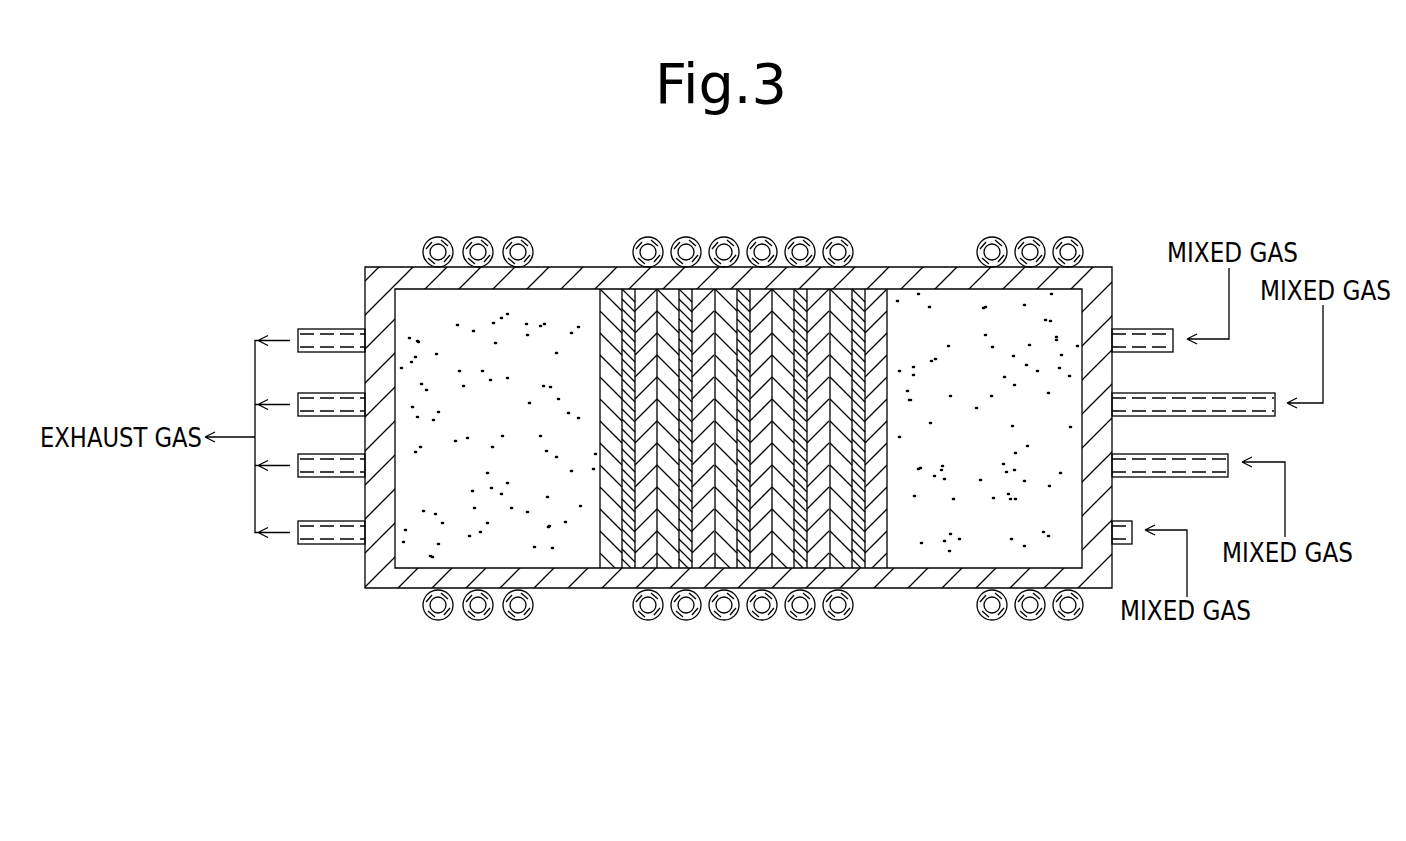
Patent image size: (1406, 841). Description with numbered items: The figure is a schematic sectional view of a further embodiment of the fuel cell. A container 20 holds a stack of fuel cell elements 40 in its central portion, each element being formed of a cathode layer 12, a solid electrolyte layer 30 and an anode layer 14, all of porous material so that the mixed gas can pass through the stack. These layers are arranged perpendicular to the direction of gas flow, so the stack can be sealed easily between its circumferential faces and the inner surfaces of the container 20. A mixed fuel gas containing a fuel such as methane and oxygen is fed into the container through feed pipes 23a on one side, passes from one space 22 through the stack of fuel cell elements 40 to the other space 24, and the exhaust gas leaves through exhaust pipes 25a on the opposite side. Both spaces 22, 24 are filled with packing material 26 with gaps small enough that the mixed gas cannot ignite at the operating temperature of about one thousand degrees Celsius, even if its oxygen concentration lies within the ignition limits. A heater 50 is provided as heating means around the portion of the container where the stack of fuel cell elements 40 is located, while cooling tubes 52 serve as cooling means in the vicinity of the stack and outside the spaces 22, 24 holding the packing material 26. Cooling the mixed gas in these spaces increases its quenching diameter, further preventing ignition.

The cathode layer 12 is at (612, 560).
The anode layer 14 is at (647, 543).
The container 20 is at (388, 578).
The space 22 is at (945, 520).
The feed pipe 23a is at (1138, 340).
The space 24 is at (535, 322).
The exhaust pipe 25a is at (325, 340).
The packing material 26 is at (572, 322).
The solid electrolyte layer 30 is at (627, 545).
The stack of fuel cell elements 40 is at (734, 525).
The heater 50 is at (860, 228).
The cooling tube 52 is at (417, 228).